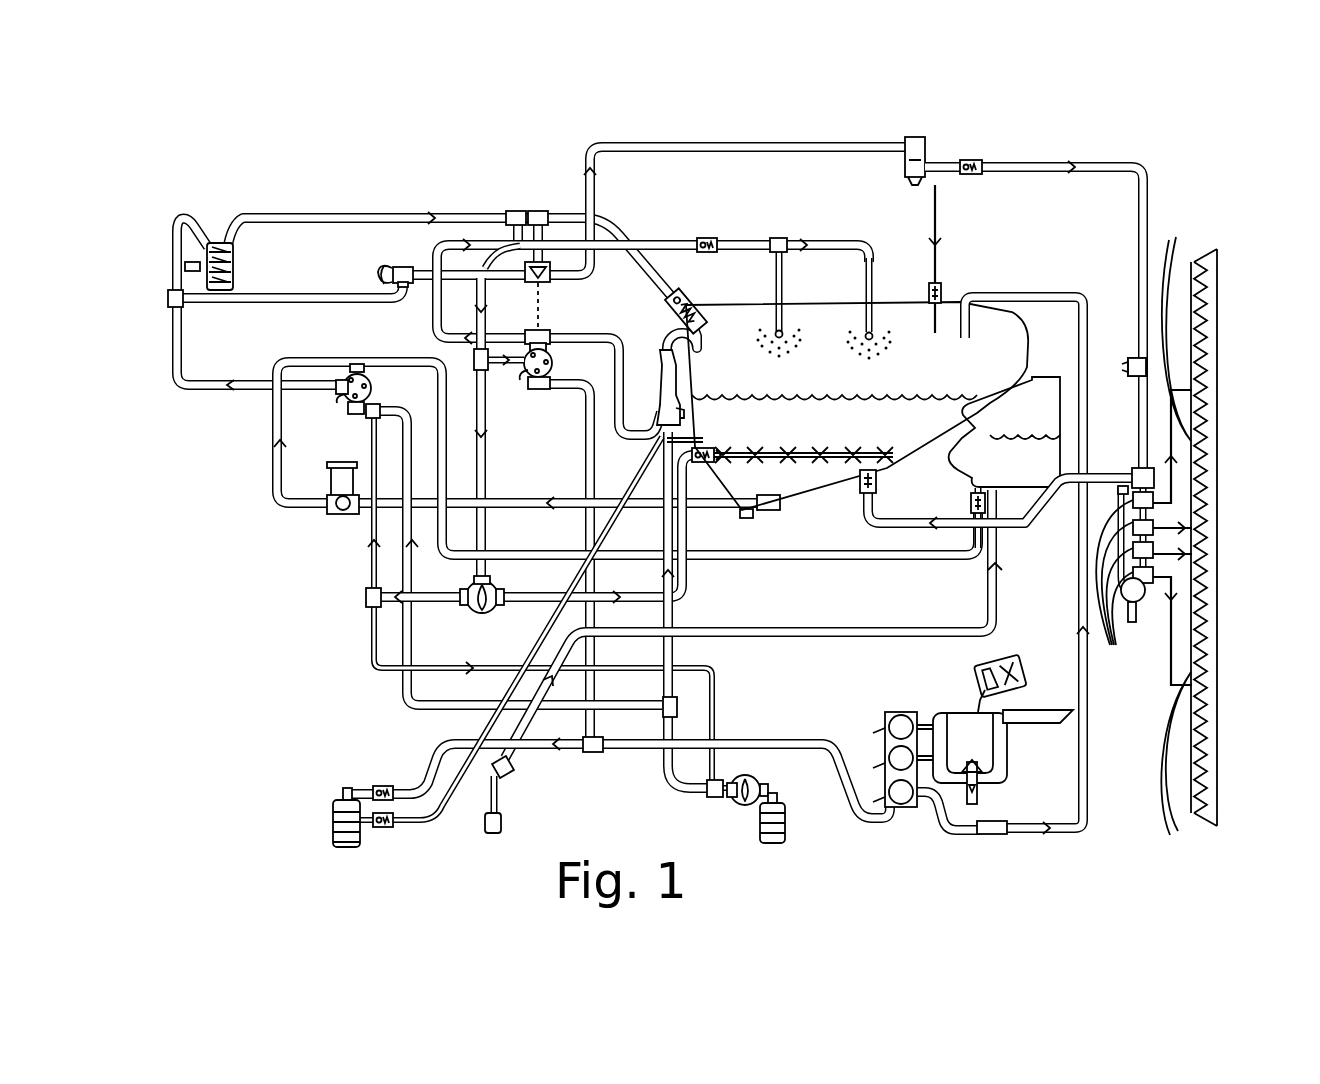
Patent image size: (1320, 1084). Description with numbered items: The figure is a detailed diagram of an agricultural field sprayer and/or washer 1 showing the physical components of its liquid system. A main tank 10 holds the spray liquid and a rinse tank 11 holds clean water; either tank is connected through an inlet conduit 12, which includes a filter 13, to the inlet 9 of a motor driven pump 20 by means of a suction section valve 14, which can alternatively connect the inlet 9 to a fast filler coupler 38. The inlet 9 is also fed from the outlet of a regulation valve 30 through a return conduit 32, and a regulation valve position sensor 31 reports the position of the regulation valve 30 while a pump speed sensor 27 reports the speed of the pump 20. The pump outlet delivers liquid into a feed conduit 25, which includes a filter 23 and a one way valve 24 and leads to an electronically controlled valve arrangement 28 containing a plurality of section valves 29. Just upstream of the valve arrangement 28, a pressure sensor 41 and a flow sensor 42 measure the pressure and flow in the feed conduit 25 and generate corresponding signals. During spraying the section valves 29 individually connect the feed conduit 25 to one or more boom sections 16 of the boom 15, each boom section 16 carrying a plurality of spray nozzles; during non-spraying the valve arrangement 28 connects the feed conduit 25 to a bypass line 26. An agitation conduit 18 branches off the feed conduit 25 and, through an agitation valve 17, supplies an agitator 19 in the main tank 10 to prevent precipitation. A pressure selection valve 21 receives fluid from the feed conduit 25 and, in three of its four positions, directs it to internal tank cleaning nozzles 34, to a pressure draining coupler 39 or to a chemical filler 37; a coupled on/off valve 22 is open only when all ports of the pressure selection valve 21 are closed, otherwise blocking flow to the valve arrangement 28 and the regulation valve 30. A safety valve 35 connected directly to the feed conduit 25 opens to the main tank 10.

The sprayer 1 is at (358, 155).
The pump inlet 9 is at (171, 242).
The main tank 10 is at (945, 300).
The rinse tank 11 is at (1042, 392).
The inlet conduit 12 is at (518, 498).
The filter 13 is at (333, 515).
The suction section valve 14 is at (371, 386).
The boom 15 is at (1255, 300).
The boom section 16 is at (1172, 240).
The agitation valve 17 is at (470, 604).
The agitation conduit 18 is at (487, 400).
The agitator 19 is at (768, 462).
The pump 20 is at (228, 250).
The pressure selection valve 21 is at (552, 358).
The on/off valve 22 is at (552, 282).
The filter 23 is at (918, 138).
The one way valve 24 is at (968, 158).
The feed conduit 25 is at (430, 213).
The bypass line 26 is at (1017, 528).
The pump speed sensor 27 is at (187, 268).
The valve arrangement 28 is at (1130, 455).
The section valves 29 is at (1117, 583).
The regulation valve 30 is at (390, 268).
The regulation valve position sensor 31 is at (405, 290).
The return conduit 32 is at (270, 306).
The internal tank cleaning nozzles 34 is at (790, 338).
The safety valve 35 is at (690, 298).
The chemical filler 37 is at (1005, 752).
The fast filler coupler 38 is at (785, 822).
The pressure draining coupler 39 is at (335, 822).
The pressure sensor 41 is at (1130, 365).
The flow sensor 42 is at (1134, 367).